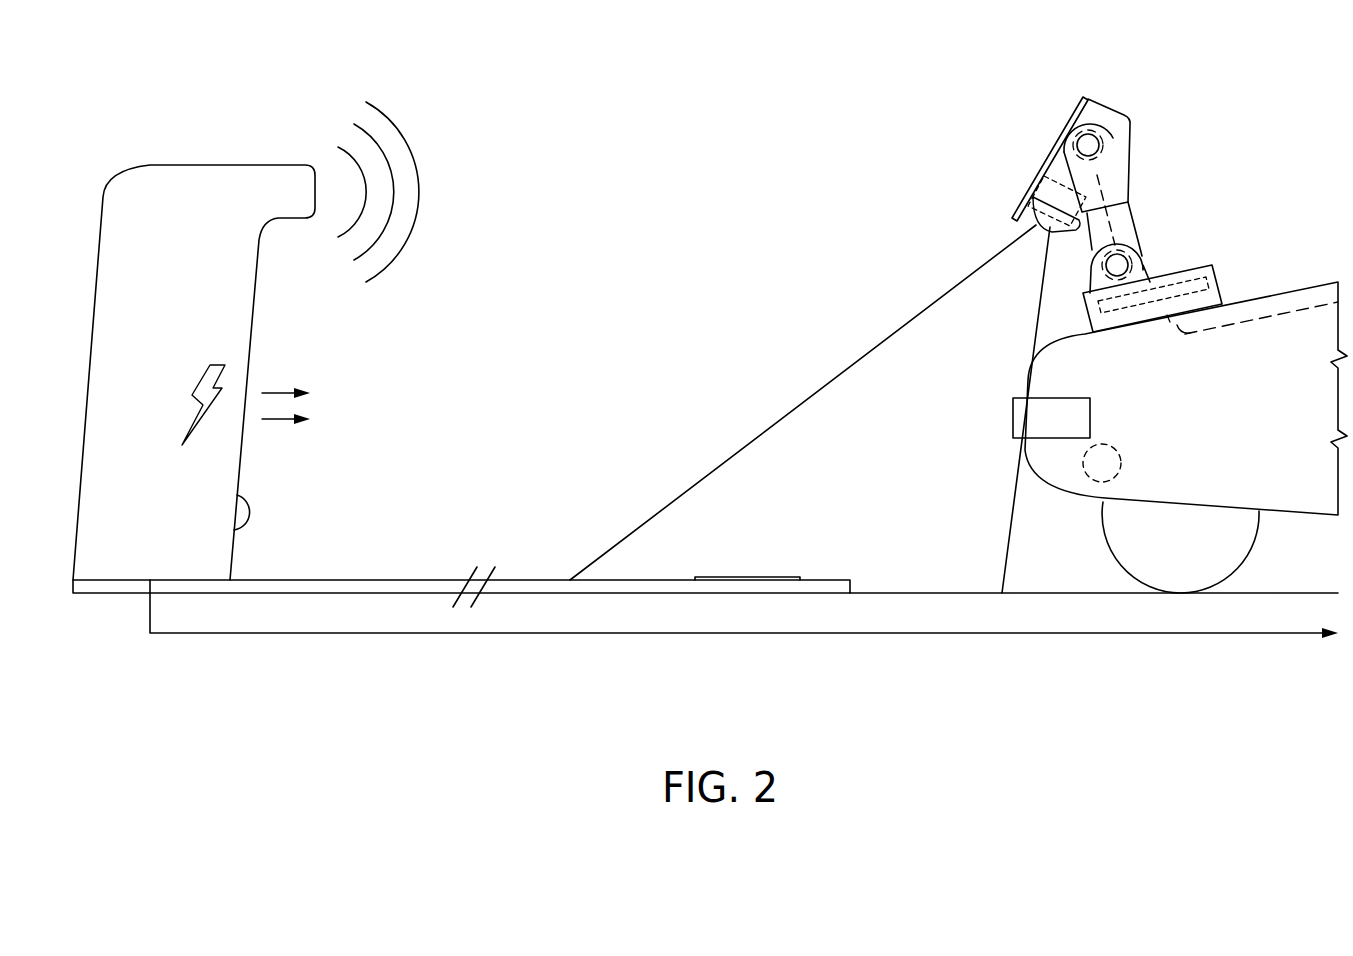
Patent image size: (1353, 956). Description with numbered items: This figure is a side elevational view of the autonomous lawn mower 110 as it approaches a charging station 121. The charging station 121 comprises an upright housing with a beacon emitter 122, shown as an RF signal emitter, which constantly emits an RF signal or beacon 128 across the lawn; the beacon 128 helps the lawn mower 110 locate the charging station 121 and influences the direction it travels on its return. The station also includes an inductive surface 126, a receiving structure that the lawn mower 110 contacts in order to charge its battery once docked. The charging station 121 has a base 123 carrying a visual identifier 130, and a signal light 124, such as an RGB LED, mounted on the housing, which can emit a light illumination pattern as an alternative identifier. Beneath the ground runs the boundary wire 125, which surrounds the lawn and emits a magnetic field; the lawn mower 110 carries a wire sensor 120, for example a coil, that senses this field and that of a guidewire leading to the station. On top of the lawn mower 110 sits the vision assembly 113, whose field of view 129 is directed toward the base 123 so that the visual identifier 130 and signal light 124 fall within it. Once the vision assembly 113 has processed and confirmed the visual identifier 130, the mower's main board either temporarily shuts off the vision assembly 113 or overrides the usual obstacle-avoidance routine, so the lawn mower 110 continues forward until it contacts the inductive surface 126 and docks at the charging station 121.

The autonomous lawn mower 110 is at (1227, 428).
The vision assembly 113 is at (1112, 108).
The wire sensor 120 is at (1122, 463).
The charging station 121 is at (453, 349).
The beacon emitter 122 is at (220, 163).
The base 123 is at (392, 578).
The signal light 124 is at (253, 513).
The boundary wire 125 is at (303, 633).
The inductive surface 126 is at (345, 420).
The beacon 128 is at (458, 148).
The field of view 129 is at (945, 298).
The visual identifier 130 is at (752, 577).